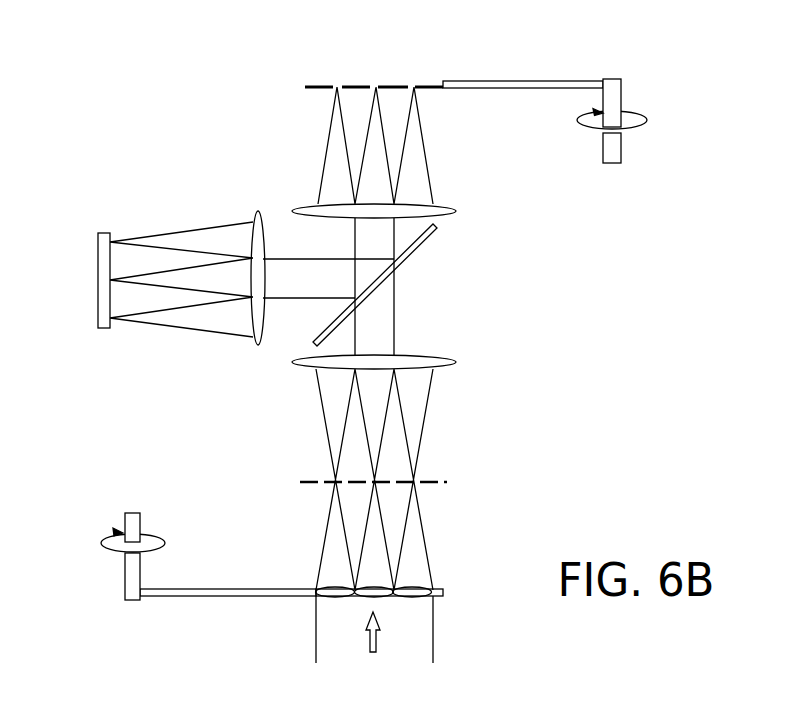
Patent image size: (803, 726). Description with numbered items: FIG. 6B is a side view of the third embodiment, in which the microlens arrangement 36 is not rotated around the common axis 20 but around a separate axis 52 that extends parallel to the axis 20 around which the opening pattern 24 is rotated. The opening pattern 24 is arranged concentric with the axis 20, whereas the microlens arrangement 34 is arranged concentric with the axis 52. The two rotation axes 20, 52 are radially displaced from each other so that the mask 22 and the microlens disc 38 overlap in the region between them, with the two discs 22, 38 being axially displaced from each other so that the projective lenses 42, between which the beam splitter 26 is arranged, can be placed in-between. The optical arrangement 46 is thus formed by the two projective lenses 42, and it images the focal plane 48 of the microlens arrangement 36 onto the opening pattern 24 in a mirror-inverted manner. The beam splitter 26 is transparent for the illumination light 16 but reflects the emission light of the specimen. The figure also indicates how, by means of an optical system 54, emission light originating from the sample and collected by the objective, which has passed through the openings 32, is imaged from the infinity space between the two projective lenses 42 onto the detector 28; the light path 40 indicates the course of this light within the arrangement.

The illumination light 16 is at (372, 647).
The axis 20 is at (613, 94).
The mask 22 is at (512, 78).
The opening pattern 24 is at (377, 80).
The beam splitter 26 is at (408, 252).
The detector 28 is at (102, 257).
The openings 32 is at (337, 87).
The microlens arrangement 34 is at (407, 608).
The microlens arrangement 36 is at (408, 588).
The microlens disc 38 is at (243, 600).
The light path 40 is at (323, 238).
The projective lenses 42 is at (423, 211).
The optical arrangement 46 is at (570, 376).
The focal plane 48 is at (424, 480).
The axis 52 is at (132, 577).
The optical system 54 is at (262, 336).